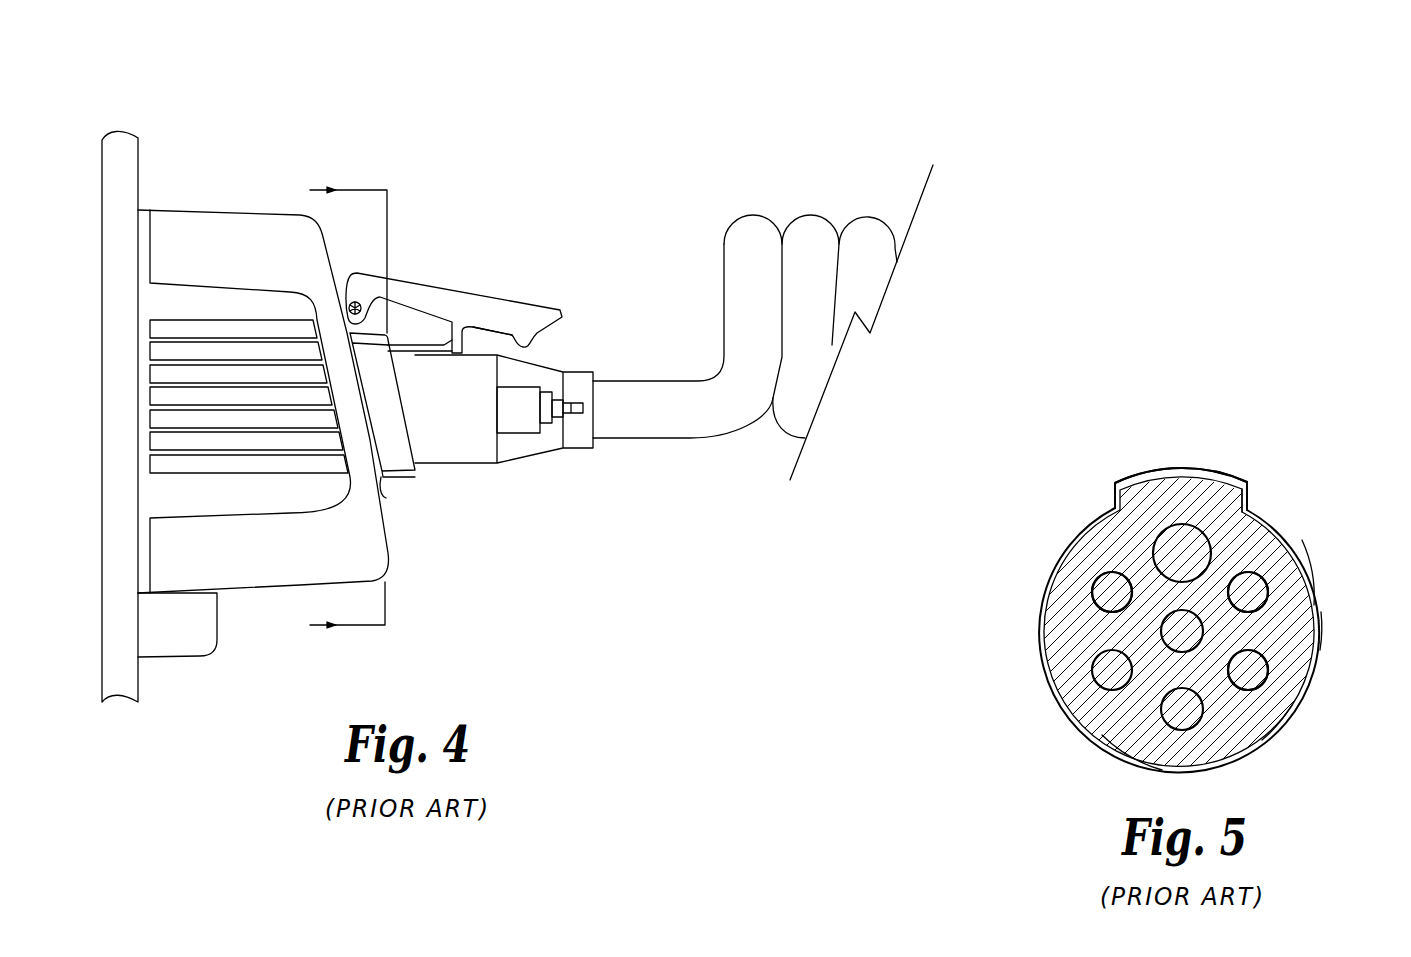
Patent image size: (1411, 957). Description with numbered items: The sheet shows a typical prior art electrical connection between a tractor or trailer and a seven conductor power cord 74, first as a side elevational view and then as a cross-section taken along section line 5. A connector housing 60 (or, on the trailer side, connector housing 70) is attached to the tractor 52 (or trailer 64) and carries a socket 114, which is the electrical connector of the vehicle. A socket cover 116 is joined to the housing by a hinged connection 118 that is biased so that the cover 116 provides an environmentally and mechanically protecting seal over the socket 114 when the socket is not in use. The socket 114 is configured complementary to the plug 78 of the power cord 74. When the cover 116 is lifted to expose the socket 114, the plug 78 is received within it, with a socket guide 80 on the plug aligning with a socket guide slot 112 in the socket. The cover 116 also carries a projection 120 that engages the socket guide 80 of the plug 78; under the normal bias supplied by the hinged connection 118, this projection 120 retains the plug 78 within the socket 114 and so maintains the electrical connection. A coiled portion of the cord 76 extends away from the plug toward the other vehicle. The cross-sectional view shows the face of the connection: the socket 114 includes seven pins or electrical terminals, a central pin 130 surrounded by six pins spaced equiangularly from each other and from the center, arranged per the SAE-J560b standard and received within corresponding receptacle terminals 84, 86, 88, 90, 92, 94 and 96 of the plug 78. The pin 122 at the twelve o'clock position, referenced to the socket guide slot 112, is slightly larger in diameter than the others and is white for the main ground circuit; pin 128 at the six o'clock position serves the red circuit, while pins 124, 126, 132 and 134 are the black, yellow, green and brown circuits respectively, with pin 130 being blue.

In FIG. 4, the tractor 52 is at (167, 393).
In FIG. 4, the trailer 64 is at (140, 152).
In FIG. 4, the connector housing 60 is at (263, 396).
In FIG. 4, the connector housing 70 is at (222, 212).
In FIG. 4, the section line 5 is at (335, 407).
In FIG. 4, the hinged connection 118 is at (347, 292).
In FIG. 4, the socket guide 80 is at (412, 345).
In FIG. 4, the socket cover 116 is at (447, 297).
In FIG. 4, the projection 120 is at (478, 330).
In FIG. 4, the socket 114 is at (400, 483).
In FIG. 5, the socket 114 is at (1197, 471).
In FIG. 4, the plug 78 is at (490, 465).
In FIG. 5, the plug 78 is at (1128, 532).
In FIG. 4, the power cord 74 is at (678, 364).
In FIG. 4, the coiled cable section 76 is at (815, 213).
In FIG. 5, the pin 122 is at (1170, 528).
In FIG. 5, the socket guide slot 112 is at (1252, 478).
In FIG. 5, the receptacle terminal 84 is at (1225, 540).
In FIG. 5, the pin 124 is at (1270, 578).
In FIG. 5, the receptacle terminal 86 is at (1090, 570).
In FIG. 5, the pin 134 is at (1090, 598).
In FIG. 5, the receptacle terminal 96 is at (1310, 573).
In FIG. 5, the receptacle terminal 88 is at (1322, 605).
In FIG. 5, the pin 126 is at (1322, 658).
In FIG. 5, the pin 132 is at (1105, 677).
In FIG. 5, the receptacle terminal 90 is at (1075, 696).
In FIG. 5, the receptacle terminal 94 is at (1300, 702).
In FIG. 5, the pin 128 is at (1150, 685).
In FIG. 5, the pin 130 is at (1224, 712).
In FIG. 5, the receptacle terminal 92 is at (1120, 763).